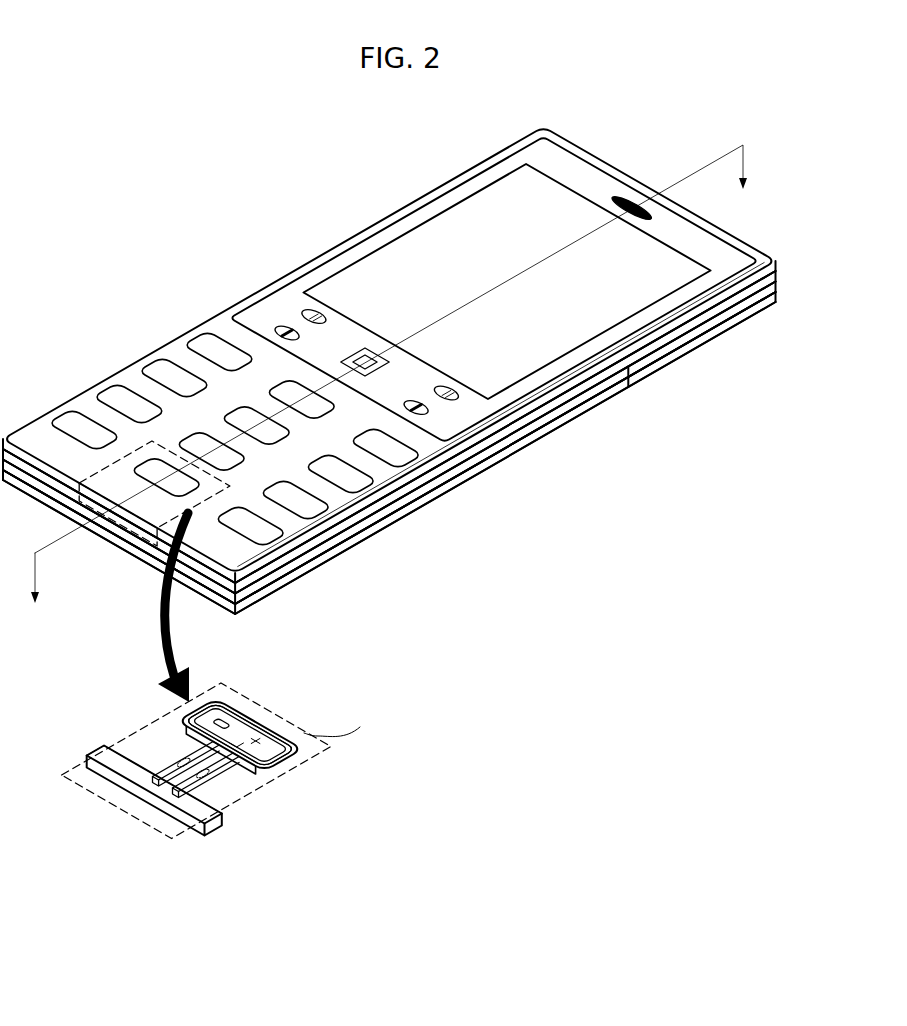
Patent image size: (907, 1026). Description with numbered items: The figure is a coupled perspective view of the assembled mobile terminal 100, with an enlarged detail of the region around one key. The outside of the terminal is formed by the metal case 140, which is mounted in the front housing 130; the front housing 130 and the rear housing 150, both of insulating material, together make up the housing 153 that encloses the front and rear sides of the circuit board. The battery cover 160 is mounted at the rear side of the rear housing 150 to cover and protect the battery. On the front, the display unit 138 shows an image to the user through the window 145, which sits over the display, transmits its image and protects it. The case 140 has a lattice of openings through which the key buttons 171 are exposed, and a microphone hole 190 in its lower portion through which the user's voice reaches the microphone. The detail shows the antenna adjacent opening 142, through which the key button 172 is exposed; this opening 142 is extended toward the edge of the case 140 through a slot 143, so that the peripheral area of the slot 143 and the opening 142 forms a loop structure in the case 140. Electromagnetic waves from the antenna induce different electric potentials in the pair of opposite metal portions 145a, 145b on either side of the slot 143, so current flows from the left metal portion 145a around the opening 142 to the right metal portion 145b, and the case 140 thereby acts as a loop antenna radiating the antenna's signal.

The mobile terminal 100 is at (838, 160).
The display unit 138 is at (524, 216).
The window 145 is at (426, 213).
The case 140 is at (80, 408).
The key buttons 171 is at (108, 392).
The front housing 130 is at (712, 309).
The rear housing 150 is at (680, 345).
The housing 153 is at (802, 344).
The battery cover 160 is at (560, 420).
The microphone hole 190 is at (250, 574).
The antenna adjacent opening 142 is at (262, 710).
The slot 143 is at (103, 750).
The left metal portion 145a is at (180, 756).
The right metal portion 145b is at (236, 770).
The key button 172 is at (282, 768).